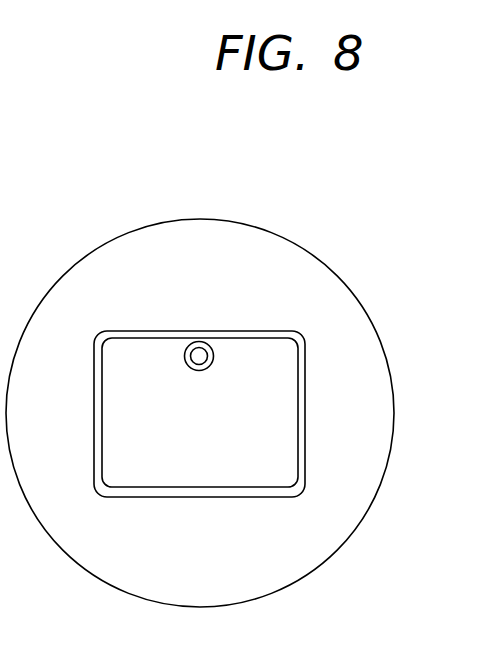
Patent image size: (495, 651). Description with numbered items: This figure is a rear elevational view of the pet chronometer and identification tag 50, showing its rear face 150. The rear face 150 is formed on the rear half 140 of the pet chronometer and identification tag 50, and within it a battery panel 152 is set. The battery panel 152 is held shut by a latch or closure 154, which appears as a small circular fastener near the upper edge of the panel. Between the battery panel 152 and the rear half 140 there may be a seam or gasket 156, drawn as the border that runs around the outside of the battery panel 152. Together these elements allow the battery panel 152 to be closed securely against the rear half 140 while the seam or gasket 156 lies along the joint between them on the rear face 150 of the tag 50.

The pet chronometer and identification tag 50 is at (312, 203).
The rear half 140 is at (279, 557).
The rear face 150 is at (363, 355).
The battery panel 152 is at (183, 402).
The latch or closure 154 is at (214, 356).
The seam or gasket 156 is at (301, 492).